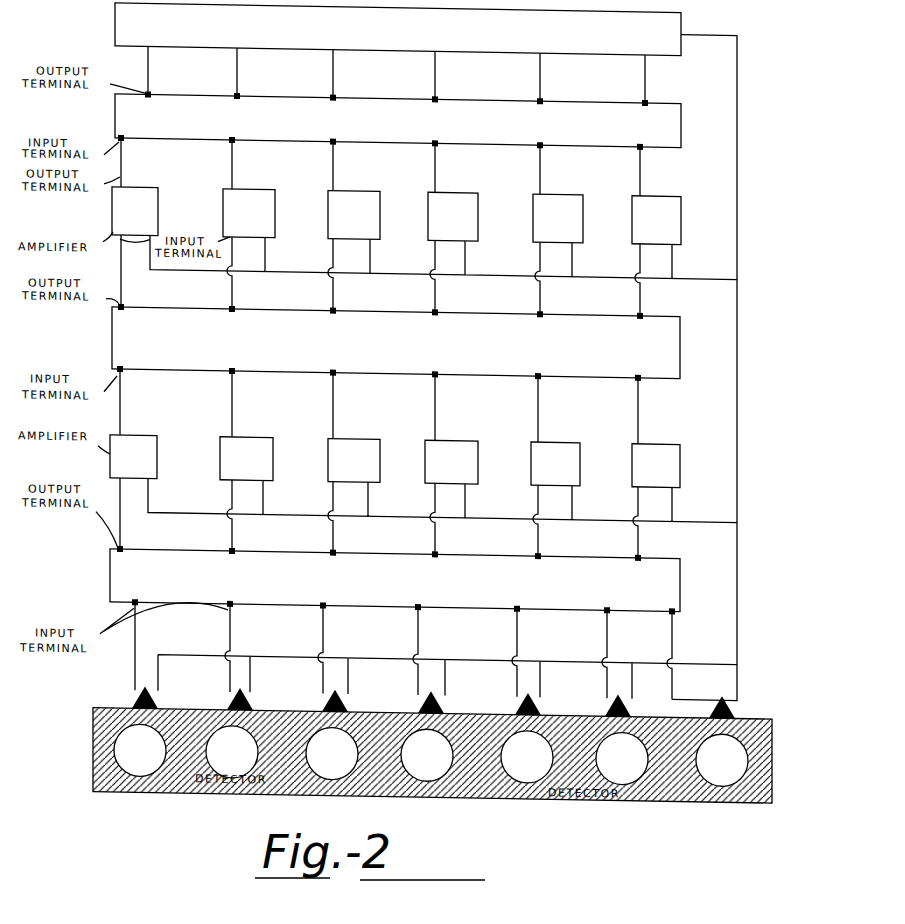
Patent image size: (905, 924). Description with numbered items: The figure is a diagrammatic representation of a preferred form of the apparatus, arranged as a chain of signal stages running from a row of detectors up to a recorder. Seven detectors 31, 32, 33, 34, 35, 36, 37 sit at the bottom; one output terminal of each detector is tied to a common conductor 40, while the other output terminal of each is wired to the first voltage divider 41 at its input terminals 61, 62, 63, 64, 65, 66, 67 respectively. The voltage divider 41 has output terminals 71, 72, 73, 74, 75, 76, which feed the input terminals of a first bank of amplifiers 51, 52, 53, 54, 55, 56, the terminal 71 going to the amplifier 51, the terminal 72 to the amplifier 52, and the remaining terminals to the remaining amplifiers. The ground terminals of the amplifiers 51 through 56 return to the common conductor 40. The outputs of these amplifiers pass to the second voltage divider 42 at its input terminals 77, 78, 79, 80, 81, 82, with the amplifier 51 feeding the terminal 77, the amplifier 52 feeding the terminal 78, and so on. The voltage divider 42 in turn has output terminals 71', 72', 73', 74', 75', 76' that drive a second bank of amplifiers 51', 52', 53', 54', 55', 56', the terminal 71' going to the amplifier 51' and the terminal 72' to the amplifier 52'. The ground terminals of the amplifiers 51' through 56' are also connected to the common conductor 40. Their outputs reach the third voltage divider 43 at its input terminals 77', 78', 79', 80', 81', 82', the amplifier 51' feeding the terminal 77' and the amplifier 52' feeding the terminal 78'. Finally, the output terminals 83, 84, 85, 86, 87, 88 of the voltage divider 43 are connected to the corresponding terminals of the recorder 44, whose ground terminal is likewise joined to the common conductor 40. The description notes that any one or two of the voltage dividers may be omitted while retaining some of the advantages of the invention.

The detector 31 is at (140, 731).
The detector 32 is at (232, 733).
The detector 33 is at (332, 734).
The detector 34 is at (427, 736).
The detector 35 is at (527, 738).
The detector 36 is at (622, 739).
The detector 37 is at (722, 741).
The common conductor 40 is at (738, 449).
The voltage divider 41 is at (110, 588).
The voltage divider 42 is at (112, 350).
The voltage divider 43 is at (115, 125).
The recorder 44 is at (115, 30).
The amplifier 51 is at (133, 457).
The amplifier 52 is at (246, 459).
The amplifier 53 is at (354, 461).
The amplifier 54 is at (451, 462).
The amplifier 55 is at (555, 464).
The amplifier 56 is at (656, 466).
The amplifier 51' is at (135, 211).
The amplifier 52' is at (249, 213).
The amplifier 53' is at (354, 215).
The amplifier 54' is at (453, 216).
The amplifier 55' is at (558, 218).
The amplifier 56' is at (656, 220).
The input terminal 61 is at (138, 603).
The input terminal 62 is at (233, 603).
The input terminal 63 is at (326, 603).
The input terminal 64 is at (421, 603).
The input terminal 65 is at (520, 603).
The input terminal 66 is at (610, 603).
The input terminal 67 is at (675, 603).
The output terminal 71 is at (142, 535).
The output terminal 72 is at (255, 537).
The output terminal 73 is at (359, 539).
The output terminal 74 is at (460, 540).
The output terminal 75 is at (563, 542).
The output terminal 76 is at (663, 544).
The output terminal 71' is at (150, 290).
The output terminal 72' is at (262, 292).
The output terminal 73' is at (364, 294).
The output terminal 74' is at (465, 295).
The output terminal 75' is at (569, 297).
The output terminal 76' is at (669, 299).
The input terminal 77 is at (143, 392).
The input terminal 78 is at (256, 394).
The input terminal 79 is at (356, 396).
The input terminal 80 is at (457, 397).
The input terminal 81 is at (561, 399).
The input terminal 82 is at (661, 401).
The input terminal 77' is at (150, 158).
The input terminal 78' is at (262, 160).
The input terminal 79' is at (364, 162).
The input terminal 80' is at (465, 163).
The input terminal 81' is at (569, 165).
The input terminal 82' is at (669, 167).
The output terminal 83 is at (152, 91).
The output terminal 84 is at (241, 91).
The output terminal 85 is at (337, 91).
The output terminal 86 is at (439, 91).
The output terminal 87 is at (544, 91).
The output terminal 88 is at (649, 91).